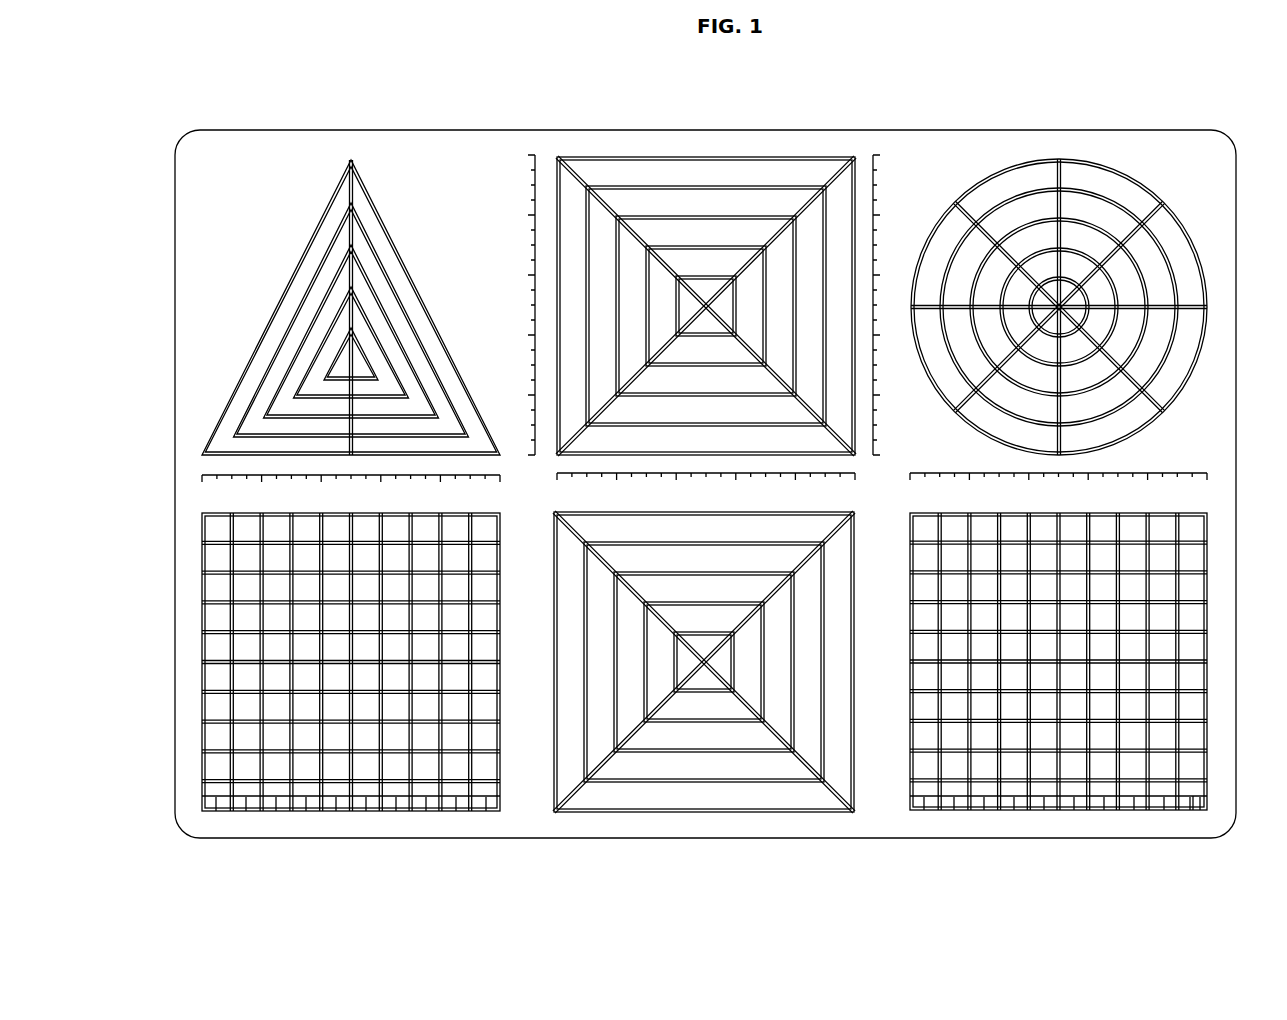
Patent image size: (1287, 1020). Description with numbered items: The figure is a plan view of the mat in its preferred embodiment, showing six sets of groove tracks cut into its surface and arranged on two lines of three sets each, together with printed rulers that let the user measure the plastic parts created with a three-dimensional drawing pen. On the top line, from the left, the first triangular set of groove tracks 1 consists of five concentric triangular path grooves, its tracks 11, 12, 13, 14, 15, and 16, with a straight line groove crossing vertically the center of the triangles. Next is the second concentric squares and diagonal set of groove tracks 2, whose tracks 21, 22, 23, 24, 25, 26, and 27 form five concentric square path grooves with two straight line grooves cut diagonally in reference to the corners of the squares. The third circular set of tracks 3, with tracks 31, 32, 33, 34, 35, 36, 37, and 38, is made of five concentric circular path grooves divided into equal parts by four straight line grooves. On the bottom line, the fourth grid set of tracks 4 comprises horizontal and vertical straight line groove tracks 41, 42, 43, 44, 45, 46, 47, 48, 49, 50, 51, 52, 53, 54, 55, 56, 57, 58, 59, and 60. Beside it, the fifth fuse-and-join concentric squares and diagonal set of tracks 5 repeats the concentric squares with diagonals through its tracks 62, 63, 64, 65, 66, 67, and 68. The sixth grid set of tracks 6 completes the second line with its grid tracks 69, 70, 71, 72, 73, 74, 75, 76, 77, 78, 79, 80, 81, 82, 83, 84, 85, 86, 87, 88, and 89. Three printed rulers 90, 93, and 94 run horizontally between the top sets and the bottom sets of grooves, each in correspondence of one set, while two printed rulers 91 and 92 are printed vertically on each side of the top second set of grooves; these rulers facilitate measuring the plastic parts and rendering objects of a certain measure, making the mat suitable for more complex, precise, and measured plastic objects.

The first triangular set of groove tracks 1 is at (260, 75).
The triangular groove track 11 is at (358, 177).
The triangular groove track 12 is at (363, 230).
The triangular groove track 13 is at (370, 283).
The triangular groove track 14 is at (373, 327).
The triangular groove track 15 is at (378, 375).
The vertical straight line groove track 16 is at (350, 365).
The second concentric squares and diagonal set of groove tracks 2 is at (733, 75).
The square groove track 21 is at (578, 160).
The square groove track 22 is at (615, 189).
The square groove track 23 is at (662, 219).
The square groove track 24 is at (705, 248).
The square groove track 25 is at (715, 278).
The diagonal groove track 26 is at (780, 230).
The diagonal groove track 27 is at (778, 380).
The third circular set of tracks 3 is at (1155, 75).
The circular groove track 31 is at (935, 227).
The circular groove track 32 is at (1007, 235).
The circular groove track 33 is at (1040, 250).
The circular groove track 34 is at (1059, 172).
The circular groove track 35 is at (1083, 293).
The straight dividing groove track 36 is at (1133, 307).
The straight dividing groove track 37 is at (1103, 353).
The straight dividing groove track 38 is at (1060, 410).
The fourth grid set of tracks 4 is at (415, 935).
The grid groove track 41 is at (218, 513).
The grid groove track 42 is at (218, 543).
The grid groove track 43 is at (218, 572).
The grid groove track 44 is at (218, 602).
The grid groove track 45 is at (218, 662).
The grid groove track 46 is at (218, 692).
The grid groove track 47 is at (218, 752).
The grid groove track 48 is at (218, 782).
The grid groove track 49 is at (203, 800).
The grid groove track 50 is at (222, 808).
The grid groove track 51 is at (232, 797).
The grid groove track 52 is at (262, 797).
The grid groove track 53 is at (292, 797).
The grid groove track 54 is at (321, 797).
The grid groove track 55 is at (351, 797).
The grid groove track 56 is at (380, 797).
The grid groove track 57 is at (410, 797).
The grid groove track 58 is at (440, 797).
The grid groove track 59 is at (470, 797).
The grid groove track 60 is at (498, 797).
The fifth fuse-and-join concentric squares and diagonal set of tracks 5 is at (712, 937).
The square groove track 62 is at (587, 812).
The square groove track 63 is at (627, 783).
The square groove track 64 is at (682, 753).
The square groove track 65 is at (710, 722).
The square groove track 66 is at (723, 692).
The diagonal groove track 67 is at (782, 738).
The diagonal groove track 68 is at (808, 557).
The sixth grid set of tracks 6 is at (1160, 937).
The grid groove track 69 is at (912, 800).
The grid groove track 70 is at (942, 800).
The grid groove track 71 is at (972, 800).
The grid groove track 72 is at (1002, 800).
The grid groove track 73 is at (1032, 800).
The grid groove track 74 is at (1062, 800).
The grid groove track 75 is at (1092, 800).
The grid groove track 76 is at (1122, 800).
The grid groove track 77 is at (1152, 800).
The grid groove track 78 is at (1182, 800).
The grid groove track 79 is at (1207, 810).
The grid groove track 80 is at (1207, 810).
The grid groove track 81 is at (1185, 782).
The grid groove track 82 is at (1185, 752).
The grid groove track 83 is at (1185, 722).
The grid groove track 84 is at (1185, 692).
The grid groove track 85 is at (1185, 662).
The grid groove track 86 is at (1185, 632).
The grid groove track 87 is at (1185, 572).
The grid groove track 88 is at (1185, 542).
The grid row 89 is at (1185, 512).
The printed ruler 90 is at (1130, 473).
The printed ruler 91 is at (873, 212).
The printed ruler 92 is at (533, 157).
The printed ruler 93 is at (685, 473).
The printed ruler 94 is at (330, 476).